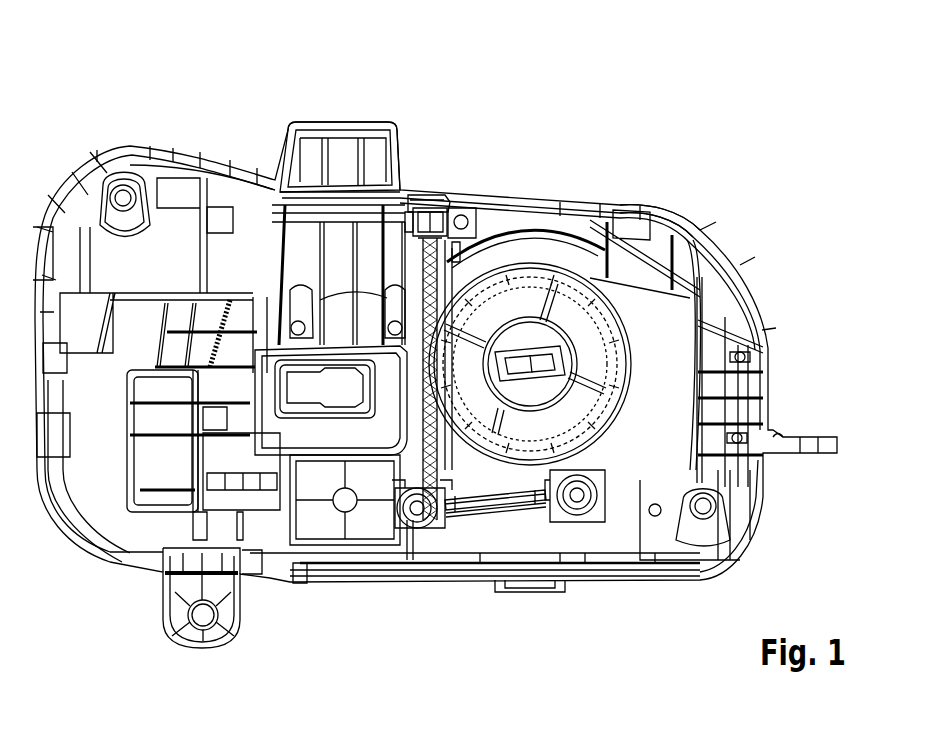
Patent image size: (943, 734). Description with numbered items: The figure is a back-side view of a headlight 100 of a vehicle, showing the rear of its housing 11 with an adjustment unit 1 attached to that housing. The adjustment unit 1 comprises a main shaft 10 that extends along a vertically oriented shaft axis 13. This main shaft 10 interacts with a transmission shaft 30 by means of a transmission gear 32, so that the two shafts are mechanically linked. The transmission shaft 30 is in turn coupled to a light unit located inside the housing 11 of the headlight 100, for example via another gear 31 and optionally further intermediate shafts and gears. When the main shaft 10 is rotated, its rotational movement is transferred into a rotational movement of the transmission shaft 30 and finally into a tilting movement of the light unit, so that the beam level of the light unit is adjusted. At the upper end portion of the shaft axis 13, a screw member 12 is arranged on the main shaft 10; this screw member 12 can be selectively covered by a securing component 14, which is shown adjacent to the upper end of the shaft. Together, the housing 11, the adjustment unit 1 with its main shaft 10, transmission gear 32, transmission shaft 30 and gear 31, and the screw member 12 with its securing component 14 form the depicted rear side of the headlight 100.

The headlight 100 is at (185, 118).
The adjustment unit 1 is at (443, 179).
The main shaft 10 is at (432, 288).
The housing 11 is at (690, 228).
The screw member 12 is at (402, 206).
The shaft axis 13 is at (432, 170).
The securing component 14 is at (445, 197).
The transmission shaft 30 is at (460, 512).
The gear 31 is at (585, 520).
The transmission gear 32 is at (405, 525).